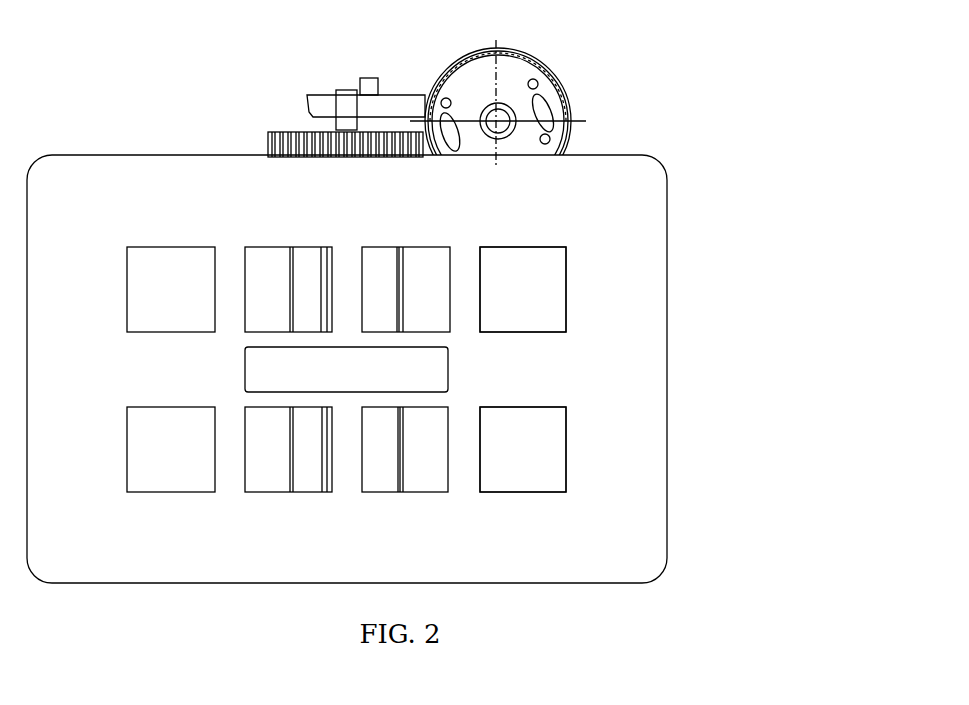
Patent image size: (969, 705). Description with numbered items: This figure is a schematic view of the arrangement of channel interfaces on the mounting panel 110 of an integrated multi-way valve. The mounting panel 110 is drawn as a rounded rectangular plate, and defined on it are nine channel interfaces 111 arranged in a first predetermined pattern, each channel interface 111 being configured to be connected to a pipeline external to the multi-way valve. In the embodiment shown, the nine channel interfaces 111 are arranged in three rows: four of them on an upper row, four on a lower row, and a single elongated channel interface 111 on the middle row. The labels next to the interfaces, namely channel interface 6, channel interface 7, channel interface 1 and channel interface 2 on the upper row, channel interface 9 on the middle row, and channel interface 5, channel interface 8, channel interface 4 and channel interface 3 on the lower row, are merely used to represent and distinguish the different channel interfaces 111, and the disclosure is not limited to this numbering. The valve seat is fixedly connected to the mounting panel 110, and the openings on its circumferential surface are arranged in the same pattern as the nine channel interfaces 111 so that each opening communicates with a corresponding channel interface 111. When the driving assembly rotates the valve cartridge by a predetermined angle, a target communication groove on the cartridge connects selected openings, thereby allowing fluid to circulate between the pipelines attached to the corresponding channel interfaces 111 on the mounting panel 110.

The mounting panel 110 is at (597, 553).
The channel interfaces 111 is at (537, 453).
The channel interface label 1 is at (406, 269).
The channel interface label 2 is at (523, 271).
The channel interface label 3 is at (523, 467).
The channel interface label 4 is at (405, 467).
The channel interface label 5 is at (171, 468).
The channel interface label 6 is at (171, 270).
The channel interface label 7 is at (288, 270).
The channel interface label 8 is at (288, 469).
The channel interface label 9 is at (357, 369).